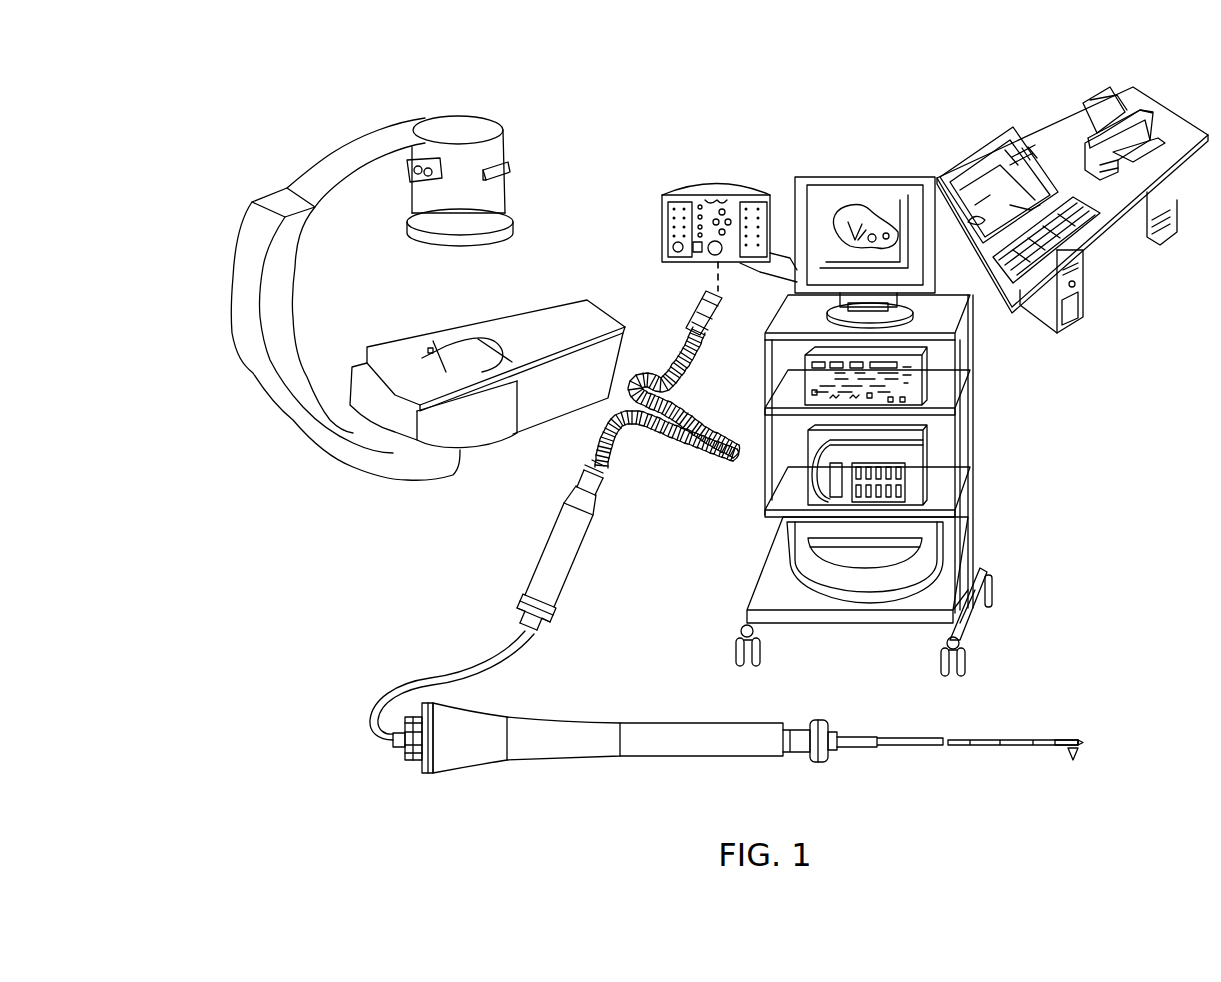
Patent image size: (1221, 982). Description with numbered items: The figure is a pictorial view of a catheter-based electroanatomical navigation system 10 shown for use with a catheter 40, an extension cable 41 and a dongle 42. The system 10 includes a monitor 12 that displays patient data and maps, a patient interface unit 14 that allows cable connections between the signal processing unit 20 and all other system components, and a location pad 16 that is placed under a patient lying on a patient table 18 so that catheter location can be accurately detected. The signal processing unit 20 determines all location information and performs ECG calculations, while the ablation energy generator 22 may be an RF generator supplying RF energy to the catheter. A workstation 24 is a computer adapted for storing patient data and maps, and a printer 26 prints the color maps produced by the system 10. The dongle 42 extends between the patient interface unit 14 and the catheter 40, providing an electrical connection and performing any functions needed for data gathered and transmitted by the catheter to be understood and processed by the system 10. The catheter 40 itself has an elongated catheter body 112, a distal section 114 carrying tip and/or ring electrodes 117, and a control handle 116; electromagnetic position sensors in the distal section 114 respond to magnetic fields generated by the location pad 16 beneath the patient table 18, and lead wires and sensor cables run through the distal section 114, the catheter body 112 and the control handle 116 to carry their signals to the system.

The catheter-based electroanatomical navigation system 10 is at (632, 139).
The monitor 12 is at (853, 178).
The patient interface unit (PIU) 14 is at (719, 190).
The location pad 16 is at (839, 597).
The patient table 18 is at (558, 317).
The signal processing unit 20 is at (925, 483).
The ablation energy generator 22 is at (922, 386).
The workstation 24 is at (1061, 323).
The printer 26 is at (1136, 102).
The catheter 40 is at (632, 706).
The extension cable 41 is at (422, 677).
The dongle 42 is at (580, 569).
The elongated catheter body 112 is at (953, 738).
The distal section 114 is at (1060, 738).
The control handle 116 is at (647, 758).
The tip and/or ring electrodes 117 is at (1068, 748).